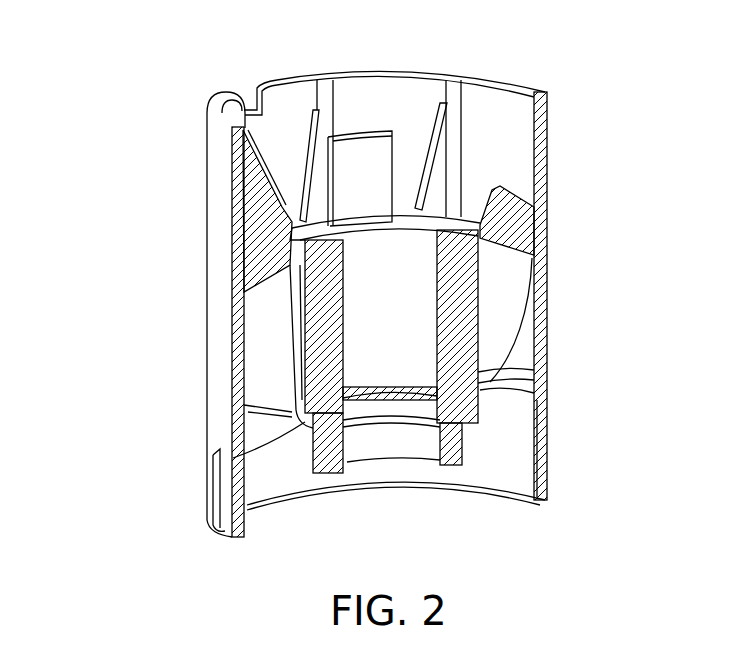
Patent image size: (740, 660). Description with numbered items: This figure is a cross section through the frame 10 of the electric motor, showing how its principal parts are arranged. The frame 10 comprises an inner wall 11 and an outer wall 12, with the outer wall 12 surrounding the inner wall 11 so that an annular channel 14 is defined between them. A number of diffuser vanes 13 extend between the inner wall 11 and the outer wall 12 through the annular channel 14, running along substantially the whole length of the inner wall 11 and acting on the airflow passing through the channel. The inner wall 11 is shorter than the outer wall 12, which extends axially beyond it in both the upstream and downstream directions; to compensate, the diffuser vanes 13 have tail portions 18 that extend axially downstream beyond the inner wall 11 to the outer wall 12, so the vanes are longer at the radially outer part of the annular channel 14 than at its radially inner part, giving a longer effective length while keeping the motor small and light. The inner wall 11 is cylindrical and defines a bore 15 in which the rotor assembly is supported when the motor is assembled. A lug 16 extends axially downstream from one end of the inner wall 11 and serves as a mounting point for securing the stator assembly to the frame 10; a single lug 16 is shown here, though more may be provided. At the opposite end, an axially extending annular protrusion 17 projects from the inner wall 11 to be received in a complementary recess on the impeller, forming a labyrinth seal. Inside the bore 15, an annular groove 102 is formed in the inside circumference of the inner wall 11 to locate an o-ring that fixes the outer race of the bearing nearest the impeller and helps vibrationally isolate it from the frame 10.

The frame 10 is at (126, 177).
The inner wall 11 is at (225, 458).
The outer wall 12 is at (540, 168).
The diffuser vanes 13 is at (318, 183).
The annular channel 14 is at (528, 377).
The bore 15 is at (405, 306).
The lug 16 is at (360, 155).
The axially extending annular protrusion 17 is at (450, 465).
The tail portions 18 is at (438, 166).
The annular groove 102 is at (390, 395).